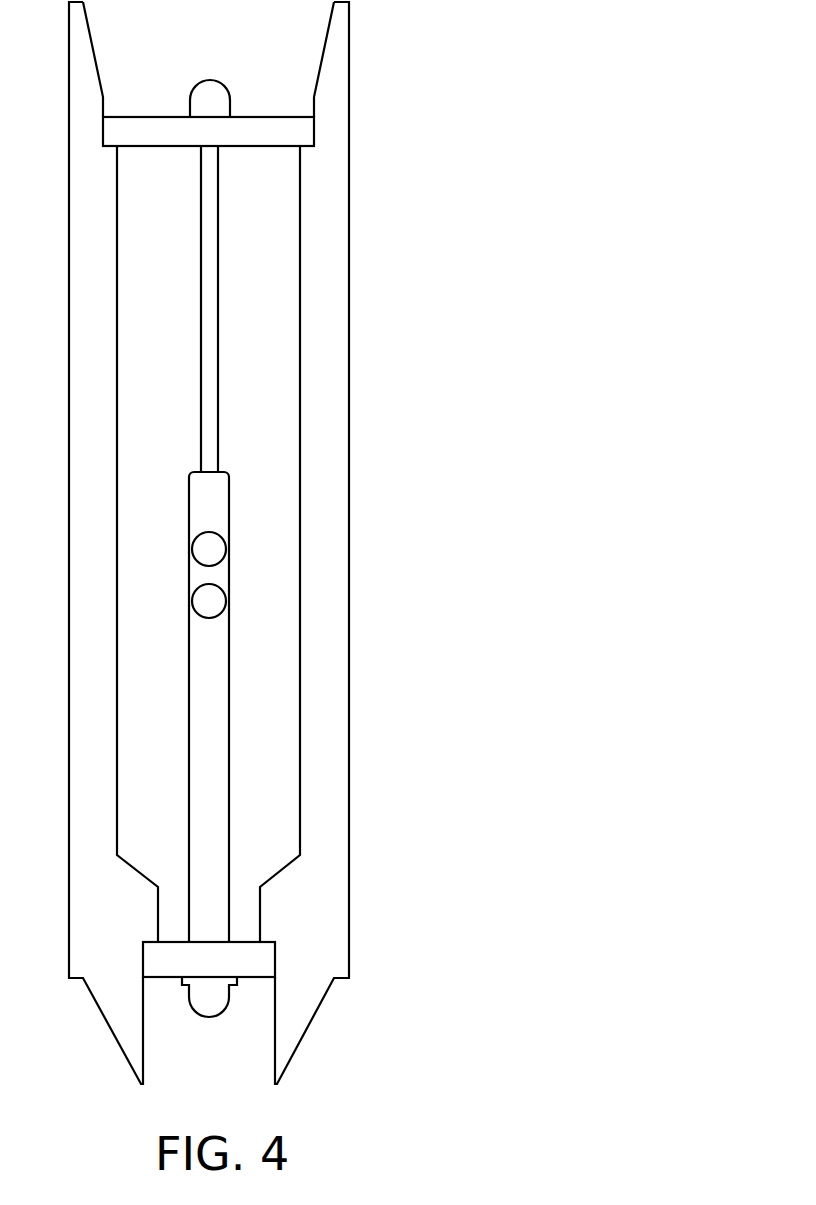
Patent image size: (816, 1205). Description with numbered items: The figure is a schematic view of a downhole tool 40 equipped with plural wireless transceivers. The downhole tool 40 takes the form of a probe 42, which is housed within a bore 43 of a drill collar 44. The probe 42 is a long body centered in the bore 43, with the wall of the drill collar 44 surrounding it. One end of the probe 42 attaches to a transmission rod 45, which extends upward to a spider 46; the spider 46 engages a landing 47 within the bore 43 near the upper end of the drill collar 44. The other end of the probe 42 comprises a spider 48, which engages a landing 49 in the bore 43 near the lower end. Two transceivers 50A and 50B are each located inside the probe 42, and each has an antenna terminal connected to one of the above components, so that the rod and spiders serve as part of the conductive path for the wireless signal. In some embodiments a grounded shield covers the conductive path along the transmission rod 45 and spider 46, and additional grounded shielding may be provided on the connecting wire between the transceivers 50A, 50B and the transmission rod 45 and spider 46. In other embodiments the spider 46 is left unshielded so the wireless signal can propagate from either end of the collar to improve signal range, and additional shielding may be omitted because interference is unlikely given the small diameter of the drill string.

The downhole tool 40 is at (292, 543).
The probe 42 is at (220, 508).
The bore 43 is at (275, 420).
The drill collar 44 is at (328, 400).
The transmission rod 45 is at (219, 285).
The spider 46 is at (139, 115).
The landing 47 is at (303, 147).
The spider 48 is at (252, 963).
The landing 49 is at (267, 943).
The transceiver 50A is at (215, 549).
The transceiver 50B is at (215, 602).